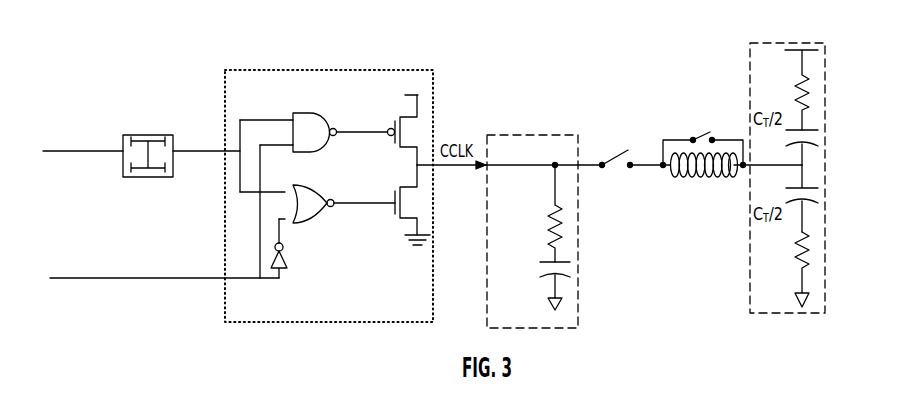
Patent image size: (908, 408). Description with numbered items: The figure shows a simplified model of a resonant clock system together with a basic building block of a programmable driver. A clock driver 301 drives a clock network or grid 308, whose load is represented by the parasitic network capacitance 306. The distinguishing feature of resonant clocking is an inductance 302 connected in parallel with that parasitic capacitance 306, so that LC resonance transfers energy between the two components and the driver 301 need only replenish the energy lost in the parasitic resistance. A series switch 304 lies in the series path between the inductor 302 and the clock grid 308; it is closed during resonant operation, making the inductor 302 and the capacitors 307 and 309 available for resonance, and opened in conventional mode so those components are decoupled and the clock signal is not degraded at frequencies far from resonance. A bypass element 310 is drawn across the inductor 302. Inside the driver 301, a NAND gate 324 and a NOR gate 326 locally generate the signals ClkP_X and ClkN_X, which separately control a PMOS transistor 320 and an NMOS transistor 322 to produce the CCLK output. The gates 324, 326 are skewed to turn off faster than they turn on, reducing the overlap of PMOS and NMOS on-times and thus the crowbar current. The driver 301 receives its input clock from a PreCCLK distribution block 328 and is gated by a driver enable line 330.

The clock driver 301 is at (348, 68).
The inductance 302 is at (698, 185).
The series switch 304 is at (611, 170).
The parasitic network capacitance 306 is at (571, 270).
The capacitor 307 is at (821, 141).
The clock network 308 is at (560, 233).
The capacitor 309 is at (821, 199).
The bypass switch 310 is at (700, 131).
The PMOS transistor 320 is at (420, 127).
The NMOS transistor 322 is at (410, 210).
The NAND gate 324 is at (298, 113).
The NOR gate 326 is at (310, 223).
The PreCCLK distribution 328 is at (192, 153).
The driver enable signal line 330 is at (155, 280).